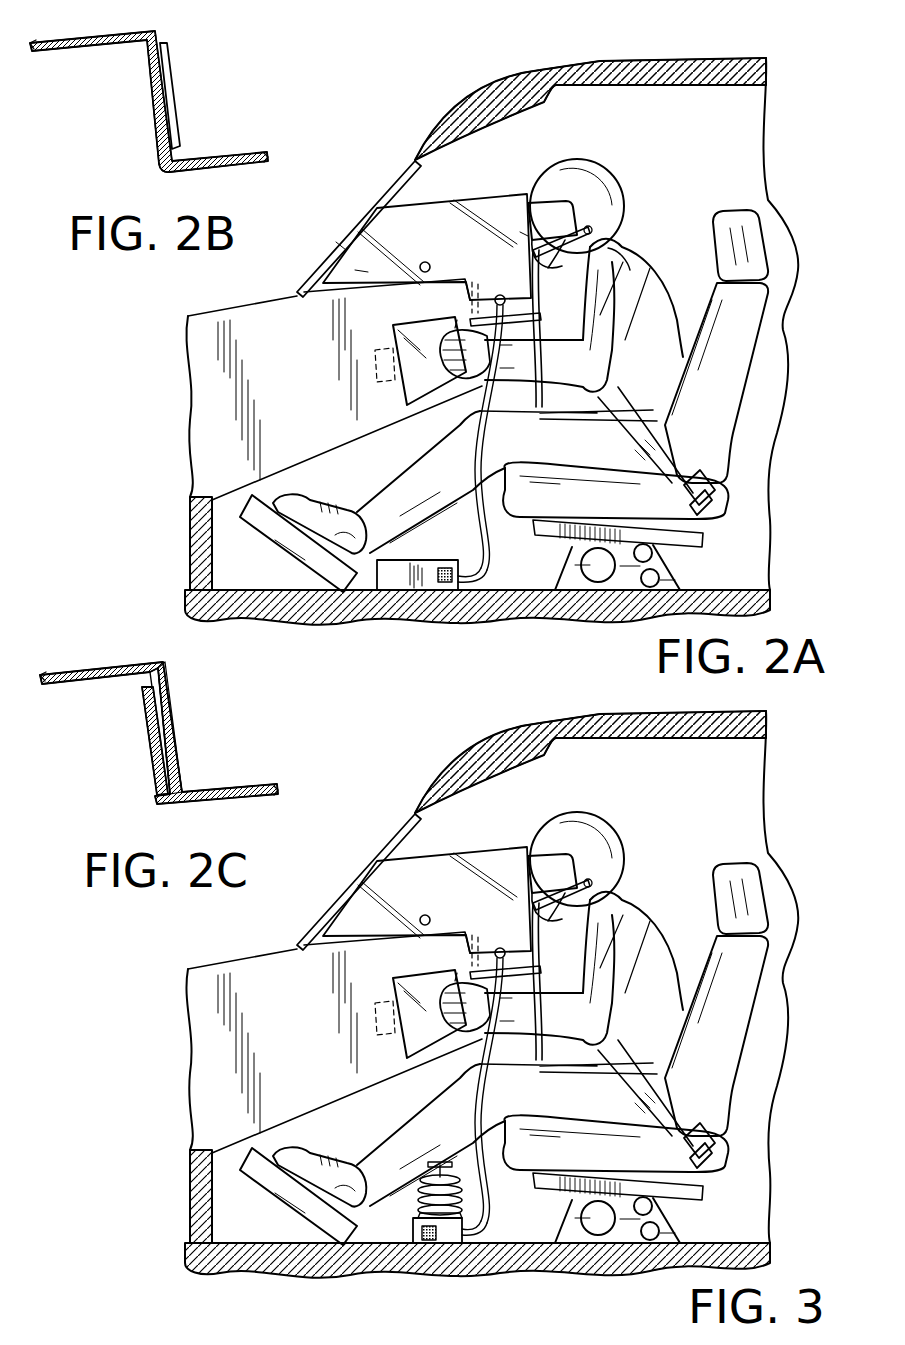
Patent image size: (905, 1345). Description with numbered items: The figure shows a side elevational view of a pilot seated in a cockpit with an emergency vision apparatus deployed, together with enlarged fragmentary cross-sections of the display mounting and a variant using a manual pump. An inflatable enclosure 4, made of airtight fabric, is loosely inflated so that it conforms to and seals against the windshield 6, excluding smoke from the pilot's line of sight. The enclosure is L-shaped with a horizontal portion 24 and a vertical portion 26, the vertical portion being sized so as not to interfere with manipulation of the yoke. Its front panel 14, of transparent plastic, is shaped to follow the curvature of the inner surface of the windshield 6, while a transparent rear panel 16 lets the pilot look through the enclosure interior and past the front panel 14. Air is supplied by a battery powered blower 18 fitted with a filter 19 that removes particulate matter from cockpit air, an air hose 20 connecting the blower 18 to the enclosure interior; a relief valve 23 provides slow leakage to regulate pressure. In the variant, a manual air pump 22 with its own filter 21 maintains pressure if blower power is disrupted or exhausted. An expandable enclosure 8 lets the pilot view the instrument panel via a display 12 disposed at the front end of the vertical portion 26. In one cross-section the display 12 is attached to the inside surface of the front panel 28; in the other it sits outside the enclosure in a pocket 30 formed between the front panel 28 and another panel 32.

In FIG. 2A, the inflatable enclosure 4 is at (497, 190).
In FIG. 3, the inflatable enclosure 4 is at (427, 866).
In FIG. 2A, the windshield 6 is at (405, 178).
In FIG. 2A, the expandable enclosure 8 is at (395, 321).
In FIG. 3, the expandable enclosure 8 is at (425, 1036).
In FIG. 2A, the display 12 is at (507, 309).
In FIG. 2B, the display 12 is at (172, 90).
In FIG. 2C, the display 12 is at (173, 748).
In FIG. 3, the display 12 is at (459, 917).
In FIG. 2A, the front panel 14 is at (340, 242).
In FIG. 2A, the rear panel 16 is at (522, 233).
In FIG. 2A, the battery powered blower 18 is at (410, 578).
In FIG. 2A, the filter 19 is at (445, 584).
In FIG. 2A, the air hose 20 is at (495, 578).
In FIG. 3, the air hose 20 is at (504, 1135).
In FIG. 3, the filter 21 is at (399, 1274).
In FIG. 3, the manual air pump 22 is at (446, 1242).
In FIG. 2A, the relief valve 23 is at (425, 262).
In FIG. 3, the relief valve 23 is at (369, 889).
In FIG. 2A, the horizontal portion 24 is at (360, 271).
In FIG. 2A, the vertical portion 26 is at (618, 255).
In FIG. 2A, the front panel 28 is at (385, 360).
In FIG. 2B, the front panel 28 is at (155, 116).
In FIG. 2C, the front panel 28 is at (170, 705).
In FIG. 2C, the pocket 30 is at (148, 670).
In FIG. 2C, the panel 32 is at (145, 745).